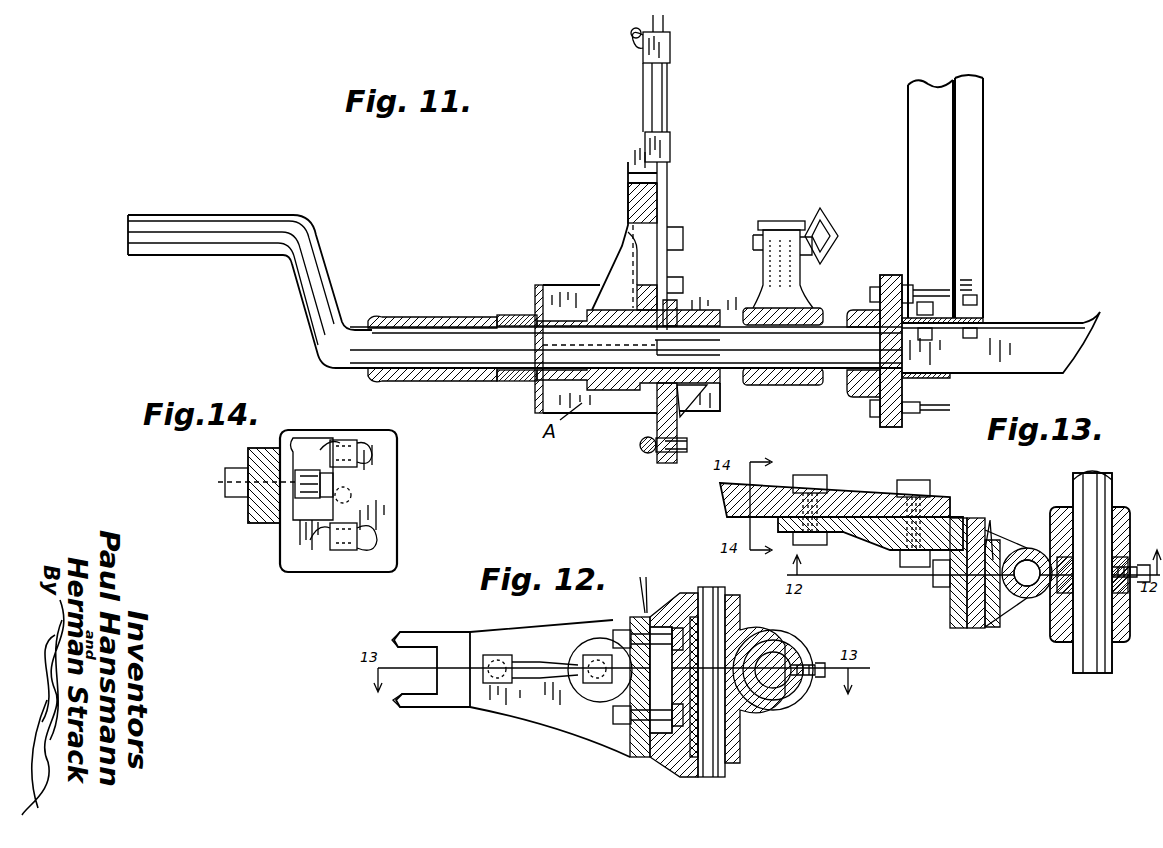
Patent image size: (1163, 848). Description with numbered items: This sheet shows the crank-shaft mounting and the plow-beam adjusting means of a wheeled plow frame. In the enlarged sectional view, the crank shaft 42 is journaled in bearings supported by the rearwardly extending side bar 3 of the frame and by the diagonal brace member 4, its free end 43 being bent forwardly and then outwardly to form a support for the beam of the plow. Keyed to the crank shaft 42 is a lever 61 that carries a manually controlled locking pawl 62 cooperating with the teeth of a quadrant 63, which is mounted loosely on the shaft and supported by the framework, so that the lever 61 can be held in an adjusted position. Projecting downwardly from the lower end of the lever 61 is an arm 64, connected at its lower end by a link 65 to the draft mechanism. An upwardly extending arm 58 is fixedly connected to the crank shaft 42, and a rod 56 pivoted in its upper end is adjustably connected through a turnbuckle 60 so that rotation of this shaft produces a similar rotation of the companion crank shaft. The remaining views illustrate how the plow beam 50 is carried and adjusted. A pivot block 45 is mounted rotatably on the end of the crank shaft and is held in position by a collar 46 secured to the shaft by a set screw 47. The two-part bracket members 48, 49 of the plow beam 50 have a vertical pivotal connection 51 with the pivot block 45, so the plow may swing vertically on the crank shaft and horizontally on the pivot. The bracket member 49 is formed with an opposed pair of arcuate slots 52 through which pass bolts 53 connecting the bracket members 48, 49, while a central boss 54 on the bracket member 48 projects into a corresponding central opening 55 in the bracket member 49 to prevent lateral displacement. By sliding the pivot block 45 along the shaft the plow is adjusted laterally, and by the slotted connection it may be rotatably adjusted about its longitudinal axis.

In FIG. 11, the side bar 3 is at (937, 316).
In FIG. 11, the diagonal brace member 4 is at (525, 316).
In FIG. 11, the crank shaft 42 is at (425, 332).
In FIG. 11, the free end of crank shaft 43 is at (325, 312).
In FIG. 12, the free end of crank shaft 43 is at (790, 655).
In FIG. 13, the free end of crank shaft 43 is at (1100, 500).
In FIG. 12, the pivot block 45 is at (745, 632).
In FIG. 13, the pivot block 45 is at (1122, 532).
In FIG. 12, the collar 46 is at (790, 690).
In FIG. 13, the collar 46 is at (1122, 567).
In FIG. 12, the set screw 47 is at (823, 680).
In FIG. 12, the bracket member 48 is at (533, 705).
In FIG. 13, the bracket member 48 is at (893, 545).
In FIG. 12, the bracket member 49 is at (672, 765).
In FIG. 13, the bracket member 49 is at (978, 630).
In FIG. 12, the plow beam 50 is at (428, 640).
In FIG. 13, the plow beam 50 is at (768, 494).
In FIG. 12, the vertical pivotal connection 51 is at (708, 610).
In FIG. 13, the vertical pivotal connection 51 is at (1029, 548).
In FIG. 14, the arcuate slots 52 is at (370, 525).
In FIG. 14, the bolts 53 is at (345, 525).
In FIG. 12, the bolts 53 is at (608, 624).
In FIG. 13, the bolts 53 is at (993, 567).
In FIG. 12, the central boss 54 is at (632, 730).
In FIG. 13, the central boss 54 is at (955, 628).
In FIG. 12, the central opening 55 is at (680, 700).
In FIG. 13, the central opening 55 is at (995, 605).
In FIG. 11, the rod 56 is at (835, 240).
In FIG. 11, the upwardly extending arm 58 is at (762, 292).
In FIG. 11, the turnbuckle 60 is at (810, 230).
In FIG. 11, the lever 61 is at (666, 76).
In FIG. 11, the locking pawl 62 is at (669, 150).
In FIG. 11, the quadrant 63 is at (632, 268).
In FIG. 11, the arm 64 is at (667, 462).
In FIG. 11, the link 65 is at (639, 445).